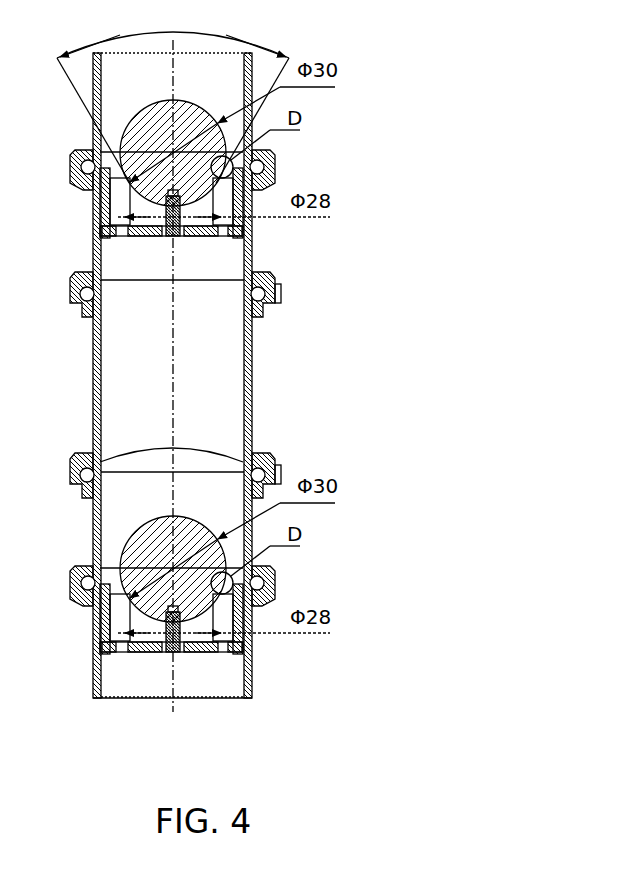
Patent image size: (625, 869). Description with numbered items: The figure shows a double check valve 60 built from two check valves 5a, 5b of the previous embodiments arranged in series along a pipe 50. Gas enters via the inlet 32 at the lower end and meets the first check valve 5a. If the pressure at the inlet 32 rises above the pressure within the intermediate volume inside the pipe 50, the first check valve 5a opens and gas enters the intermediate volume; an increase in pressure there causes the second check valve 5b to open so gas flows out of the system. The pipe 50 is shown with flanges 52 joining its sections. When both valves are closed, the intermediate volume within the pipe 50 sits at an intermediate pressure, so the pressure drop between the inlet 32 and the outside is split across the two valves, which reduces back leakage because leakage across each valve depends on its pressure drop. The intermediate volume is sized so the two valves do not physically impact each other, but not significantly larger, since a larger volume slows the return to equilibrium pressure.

The first check valve 5a is at (310, 563).
The second check valve 5b is at (317, 137).
The inlet 32 is at (196, 692).
The pipe 50 is at (282, 379).
The connecting flange 52 is at (266, 275).
The double check valve 60 is at (412, 670).